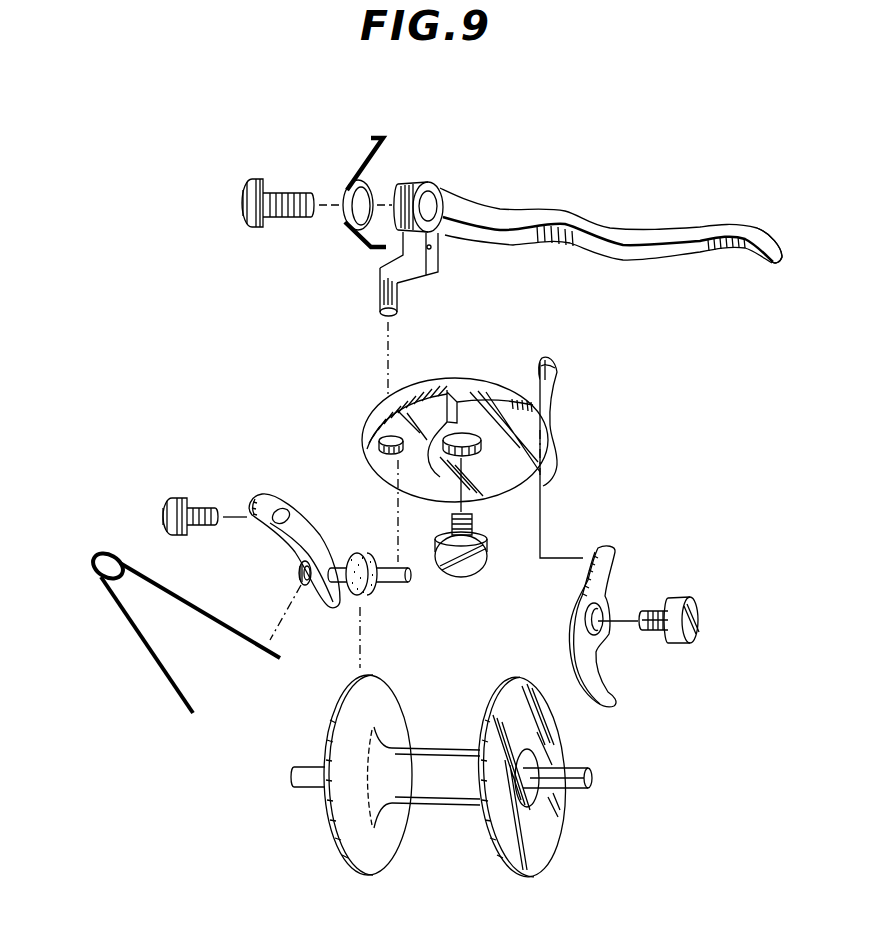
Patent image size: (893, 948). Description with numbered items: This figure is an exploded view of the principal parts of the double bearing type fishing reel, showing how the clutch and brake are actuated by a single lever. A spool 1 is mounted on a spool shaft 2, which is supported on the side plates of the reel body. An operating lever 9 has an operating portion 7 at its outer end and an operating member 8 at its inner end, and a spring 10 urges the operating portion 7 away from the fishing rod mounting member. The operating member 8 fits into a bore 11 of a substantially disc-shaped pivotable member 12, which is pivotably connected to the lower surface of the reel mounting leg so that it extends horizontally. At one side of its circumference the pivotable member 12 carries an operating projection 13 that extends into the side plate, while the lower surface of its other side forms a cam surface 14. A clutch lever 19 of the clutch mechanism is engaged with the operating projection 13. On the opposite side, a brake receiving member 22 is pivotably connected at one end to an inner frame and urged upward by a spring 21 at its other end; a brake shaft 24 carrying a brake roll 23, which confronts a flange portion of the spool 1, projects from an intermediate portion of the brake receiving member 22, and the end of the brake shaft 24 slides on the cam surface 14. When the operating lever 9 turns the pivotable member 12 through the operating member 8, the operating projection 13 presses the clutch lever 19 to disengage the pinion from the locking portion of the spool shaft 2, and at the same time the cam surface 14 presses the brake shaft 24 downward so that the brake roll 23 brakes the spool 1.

The spool 1 is at (330, 822).
The spool shaft 2 is at (305, 770).
The operating portion 7 is at (757, 238).
The operating member 8 is at (383, 296).
The operating lever 9 is at (586, 218).
The spring 10 is at (365, 162).
The bore 11 is at (383, 442).
The pivotable member 12 is at (487, 377).
The operating projection 13 is at (551, 366).
The cam surface 14 is at (423, 423).
The clutch lever 19 is at (590, 677).
The spring 21 is at (195, 607).
The brake receiving member 22 is at (312, 542).
The brake roll 23 is at (359, 556).
The brake shaft 24 is at (386, 582).